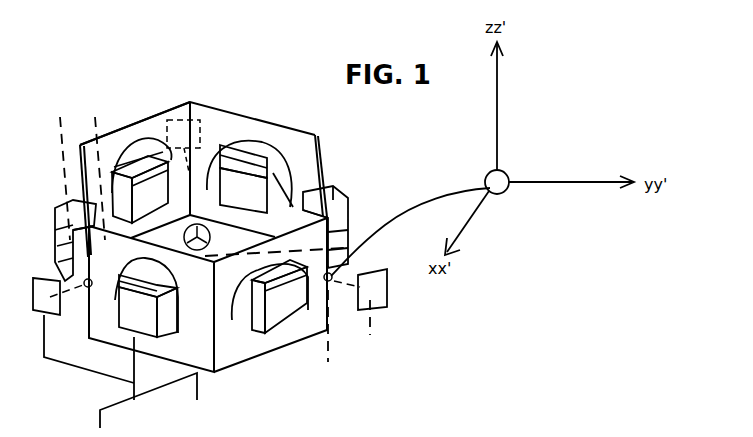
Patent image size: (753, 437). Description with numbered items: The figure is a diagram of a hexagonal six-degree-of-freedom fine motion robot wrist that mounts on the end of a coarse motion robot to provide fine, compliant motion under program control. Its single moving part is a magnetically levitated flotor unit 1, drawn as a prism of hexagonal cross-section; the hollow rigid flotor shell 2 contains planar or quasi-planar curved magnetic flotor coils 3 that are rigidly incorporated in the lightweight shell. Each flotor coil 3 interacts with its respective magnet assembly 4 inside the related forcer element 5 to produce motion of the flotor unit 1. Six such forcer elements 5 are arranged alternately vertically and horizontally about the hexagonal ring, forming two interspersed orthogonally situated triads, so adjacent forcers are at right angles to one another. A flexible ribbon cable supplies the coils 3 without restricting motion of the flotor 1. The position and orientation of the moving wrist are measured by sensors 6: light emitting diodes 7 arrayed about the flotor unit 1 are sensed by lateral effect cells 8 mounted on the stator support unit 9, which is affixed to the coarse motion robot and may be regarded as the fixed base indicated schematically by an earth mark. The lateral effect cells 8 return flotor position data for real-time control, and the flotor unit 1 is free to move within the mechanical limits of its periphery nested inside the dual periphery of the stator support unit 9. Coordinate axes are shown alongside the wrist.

The flotor unit 1 is at (274, 142).
The flotor shell 2 is at (151, 120).
The flotor coils 3 is at (203, 125).
The magnet assembly 4 is at (240, 170).
The forcer element 5 is at (100, 117).
The sensors 6 is at (372, 352).
The light emitting diodes 7 is at (333, 276).
The lateral effect cells 8 is at (385, 293).
The stator support unit 9 is at (108, 404).